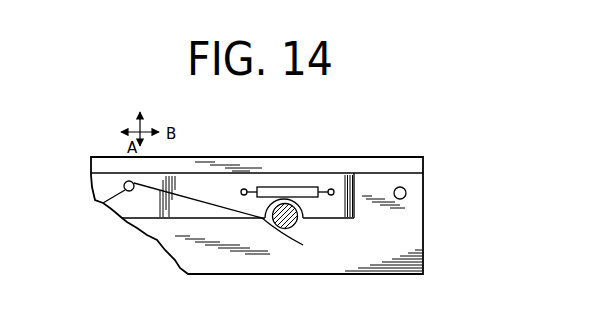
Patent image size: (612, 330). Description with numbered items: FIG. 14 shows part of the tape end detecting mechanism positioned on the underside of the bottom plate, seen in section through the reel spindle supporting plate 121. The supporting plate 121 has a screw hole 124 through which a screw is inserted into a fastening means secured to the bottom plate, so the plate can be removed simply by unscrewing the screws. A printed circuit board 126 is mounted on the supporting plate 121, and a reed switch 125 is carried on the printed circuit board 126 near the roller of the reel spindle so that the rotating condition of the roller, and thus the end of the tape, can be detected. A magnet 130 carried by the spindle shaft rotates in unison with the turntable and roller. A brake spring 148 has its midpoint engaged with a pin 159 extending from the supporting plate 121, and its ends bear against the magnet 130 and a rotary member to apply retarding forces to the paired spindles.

The reel spindle supporting plate 121 is at (410, 238).
The screw hole 124 is at (406, 191).
The reed switch 125 is at (270, 186).
The printed circuit board 126 is at (347, 175).
The magnet 130 is at (296, 223).
The brake spring 148 is at (174, 176).
The pin 159 is at (127, 181).